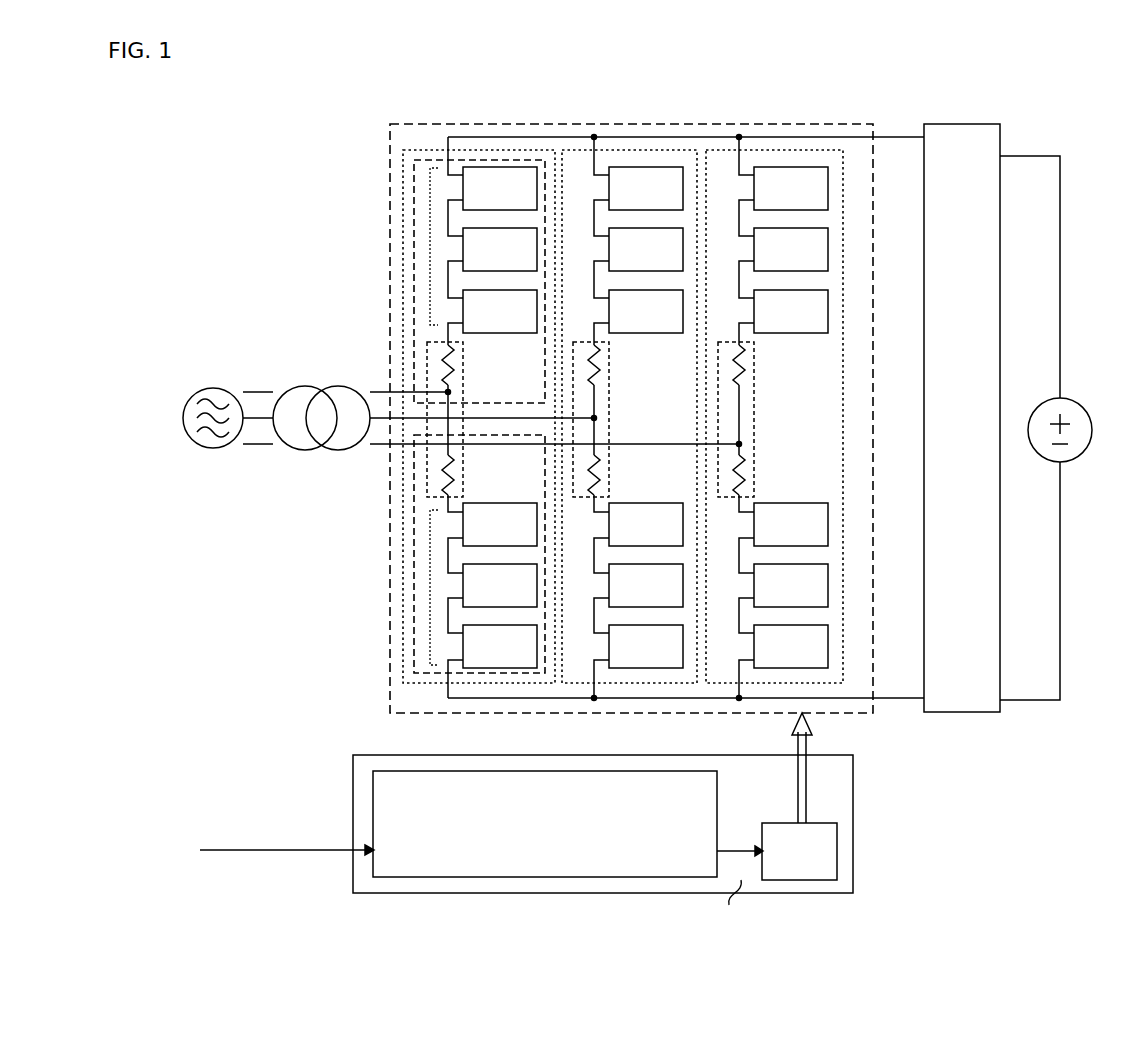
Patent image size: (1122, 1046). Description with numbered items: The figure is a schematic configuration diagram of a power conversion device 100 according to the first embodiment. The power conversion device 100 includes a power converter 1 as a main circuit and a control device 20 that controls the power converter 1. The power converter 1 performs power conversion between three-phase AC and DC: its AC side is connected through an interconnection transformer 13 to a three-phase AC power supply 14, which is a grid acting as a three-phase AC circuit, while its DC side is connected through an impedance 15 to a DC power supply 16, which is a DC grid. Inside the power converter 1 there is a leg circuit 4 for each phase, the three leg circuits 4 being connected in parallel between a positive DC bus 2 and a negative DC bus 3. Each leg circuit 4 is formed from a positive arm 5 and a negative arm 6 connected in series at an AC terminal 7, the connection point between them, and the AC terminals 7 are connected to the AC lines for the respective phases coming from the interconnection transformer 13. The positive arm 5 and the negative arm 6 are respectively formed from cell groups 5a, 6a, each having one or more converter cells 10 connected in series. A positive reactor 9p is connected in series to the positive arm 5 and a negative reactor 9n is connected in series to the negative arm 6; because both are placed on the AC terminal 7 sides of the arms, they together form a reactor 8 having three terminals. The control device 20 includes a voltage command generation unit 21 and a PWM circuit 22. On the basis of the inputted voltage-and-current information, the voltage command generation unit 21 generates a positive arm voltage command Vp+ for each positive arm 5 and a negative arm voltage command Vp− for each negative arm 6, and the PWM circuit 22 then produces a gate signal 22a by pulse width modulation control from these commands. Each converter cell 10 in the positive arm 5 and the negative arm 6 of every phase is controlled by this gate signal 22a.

The power conversion device 100 is at (641, 511).
The power converter 1 is at (556, 124).
The positive DC bus 2 is at (893, 137).
The negative DC bus 3 is at (903, 698).
The leg circuit 4 is at (425, 685).
The positive arm 5 is at (415, 190).
The cell group 5a is at (429, 240).
The negative arm 6 is at (415, 530).
The cell group 6a is at (429, 580).
The AC terminal 7 is at (448, 392).
The reactor 8 is at (465, 388).
The positive reactor 9p is at (455, 360).
The negative reactor 9n is at (455, 467).
The converter cell 10 is at (489, 168).
The interconnection transformer 13 is at (322, 386).
The three-phase AC power supply 14 is at (215, 388).
The impedance 15 is at (972, 124).
The DC power supply 16 is at (1062, 398).
The control device 20 is at (592, 893).
The voltage command generation unit 21 is at (545, 877).
The PWM circuit 22 is at (830, 880).
The gate signal 22a is at (810, 738).